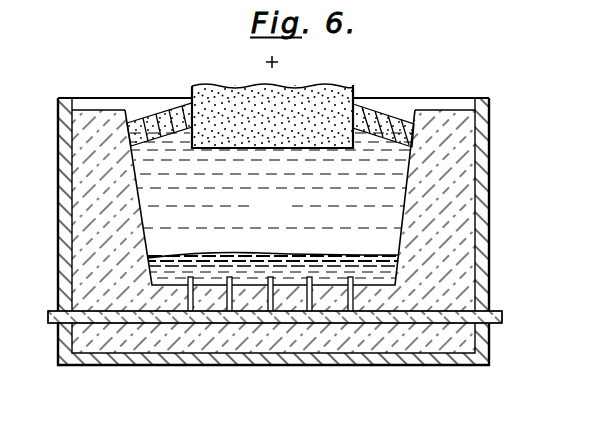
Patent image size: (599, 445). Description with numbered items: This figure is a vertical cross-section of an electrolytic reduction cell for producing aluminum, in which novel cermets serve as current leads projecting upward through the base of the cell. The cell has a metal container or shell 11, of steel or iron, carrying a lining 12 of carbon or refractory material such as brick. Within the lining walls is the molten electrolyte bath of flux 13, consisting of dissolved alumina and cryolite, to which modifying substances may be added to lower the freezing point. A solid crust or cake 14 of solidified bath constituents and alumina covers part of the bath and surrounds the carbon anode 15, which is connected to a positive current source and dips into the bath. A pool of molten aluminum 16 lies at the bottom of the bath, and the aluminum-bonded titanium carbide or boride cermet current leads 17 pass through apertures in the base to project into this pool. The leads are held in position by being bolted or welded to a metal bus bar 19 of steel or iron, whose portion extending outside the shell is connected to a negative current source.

The metal container or shell 11 is at (489, 114).
The lining 12 is at (462, 163).
The molten electrolyte bath of flux 13 is at (280, 204).
The solid crust or cake 14 is at (369, 110).
The anode 15 is at (316, 92).
The pool of molten aluminum 16 is at (383, 273).
The cermet current leads 17 is at (226, 300).
The metal bus bar 19 is at (500, 318).